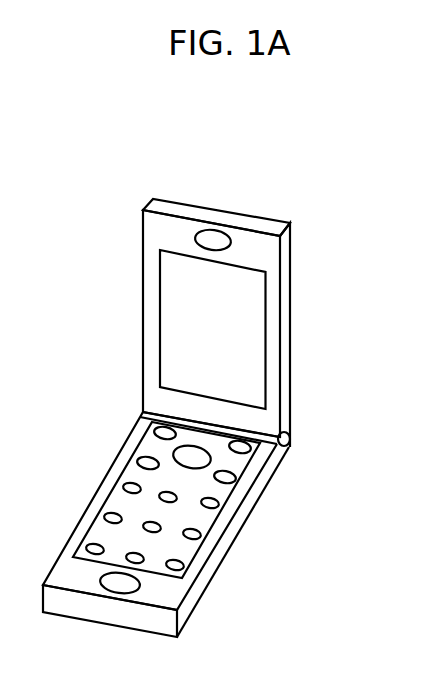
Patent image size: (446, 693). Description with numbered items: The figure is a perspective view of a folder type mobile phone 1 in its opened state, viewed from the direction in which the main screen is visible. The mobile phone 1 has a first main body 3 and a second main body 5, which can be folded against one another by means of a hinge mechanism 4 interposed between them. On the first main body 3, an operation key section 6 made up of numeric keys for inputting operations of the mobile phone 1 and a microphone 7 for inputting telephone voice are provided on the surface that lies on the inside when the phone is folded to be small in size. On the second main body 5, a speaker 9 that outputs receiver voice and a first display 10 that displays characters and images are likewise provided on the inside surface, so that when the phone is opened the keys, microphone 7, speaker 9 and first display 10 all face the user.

The folder type mobile phone 1 is at (315, 152).
The first main body 3 is at (242, 512).
The hinge mechanism 4 is at (290, 440).
The second main body 5 is at (283, 322).
The operation key section 6 is at (185, 552).
The microphone 7 is at (118, 588).
The speaker 9 is at (214, 240).
The first display 10 is at (193, 325).